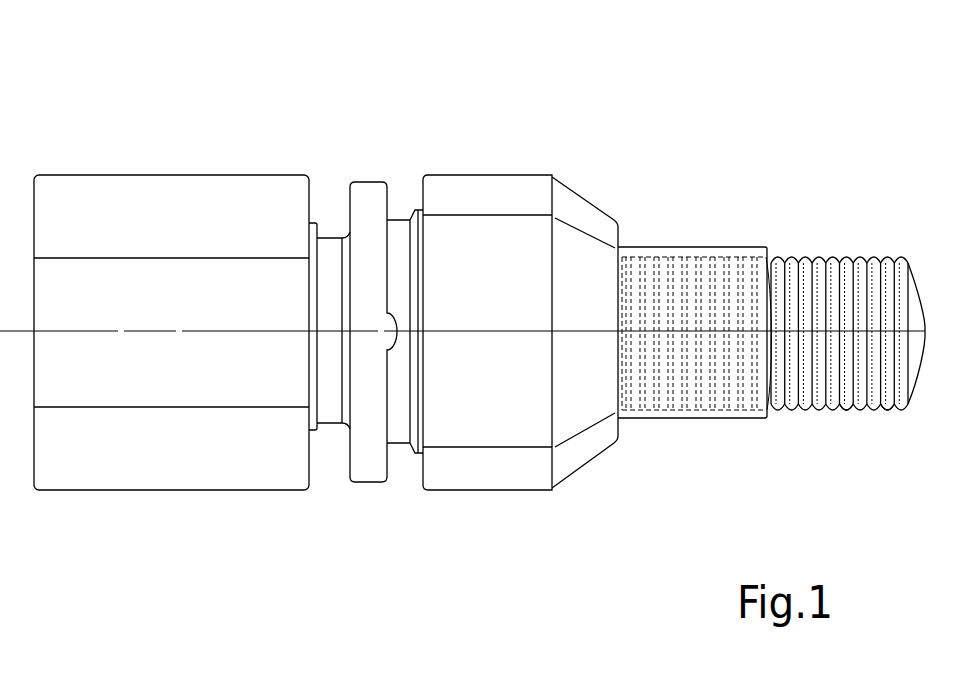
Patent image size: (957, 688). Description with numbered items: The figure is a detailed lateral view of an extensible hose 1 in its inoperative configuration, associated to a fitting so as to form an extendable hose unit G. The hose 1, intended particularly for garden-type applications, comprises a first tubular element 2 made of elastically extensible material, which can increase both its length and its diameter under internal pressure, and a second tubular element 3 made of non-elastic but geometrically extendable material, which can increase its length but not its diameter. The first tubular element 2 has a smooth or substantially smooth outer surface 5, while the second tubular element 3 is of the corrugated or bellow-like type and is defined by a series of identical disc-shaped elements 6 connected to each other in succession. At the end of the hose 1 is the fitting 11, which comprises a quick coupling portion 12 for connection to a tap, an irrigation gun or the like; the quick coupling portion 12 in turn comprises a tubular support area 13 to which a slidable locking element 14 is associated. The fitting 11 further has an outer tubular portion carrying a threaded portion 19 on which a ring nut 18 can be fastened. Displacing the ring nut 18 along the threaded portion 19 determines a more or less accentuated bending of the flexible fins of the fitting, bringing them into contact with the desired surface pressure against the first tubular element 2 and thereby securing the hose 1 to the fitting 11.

The extendable hose unit G is at (527, 145).
The extensible hose 1 is at (742, 232).
The first tubular element 2 is at (703, 422).
The second tubular element 3 is at (859, 256).
The outer surface 5 is at (690, 246).
The disc-shaped elements 6 is at (848, 415).
The fitting 11 is at (486, 503).
The quick coupling portion 12 is at (194, 497).
The tubular support area 13 is at (320, 431).
The slidable locking element 14 is at (225, 210).
The ring nut 18 is at (597, 440).
The threaded portion 19 is at (418, 213).